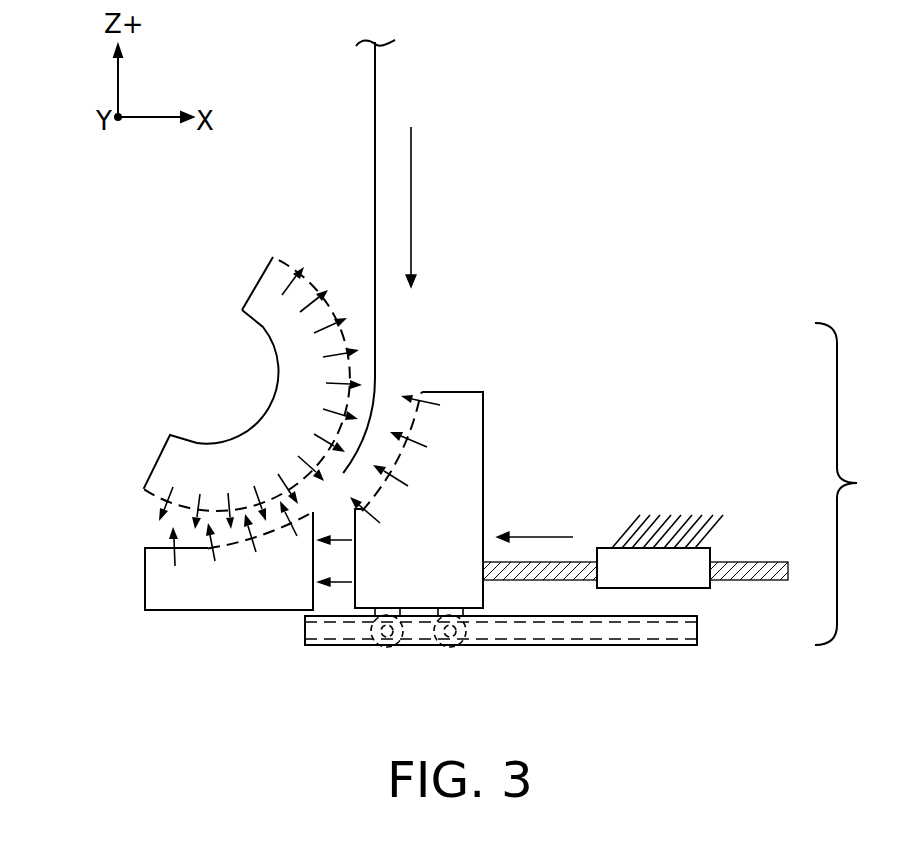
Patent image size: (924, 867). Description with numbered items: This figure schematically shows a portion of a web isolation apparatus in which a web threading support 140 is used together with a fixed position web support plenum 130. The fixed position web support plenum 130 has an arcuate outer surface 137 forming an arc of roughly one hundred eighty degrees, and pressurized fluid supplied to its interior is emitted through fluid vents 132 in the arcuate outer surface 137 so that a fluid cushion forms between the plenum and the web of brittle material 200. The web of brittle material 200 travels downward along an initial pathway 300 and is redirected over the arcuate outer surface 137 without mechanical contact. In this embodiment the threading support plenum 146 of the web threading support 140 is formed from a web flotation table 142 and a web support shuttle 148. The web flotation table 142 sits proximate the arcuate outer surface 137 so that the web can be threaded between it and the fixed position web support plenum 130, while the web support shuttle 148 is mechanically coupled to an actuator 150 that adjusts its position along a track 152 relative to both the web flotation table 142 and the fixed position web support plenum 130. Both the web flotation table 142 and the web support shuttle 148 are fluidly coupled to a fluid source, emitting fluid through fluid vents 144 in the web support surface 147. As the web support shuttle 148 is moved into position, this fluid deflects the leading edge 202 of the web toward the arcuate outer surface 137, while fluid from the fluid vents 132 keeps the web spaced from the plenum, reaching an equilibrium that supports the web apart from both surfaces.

The fixed position web support plenum 130 is at (262, 327).
The fluid vents 132 is at (343, 382).
The arcuate outer surface 137 is at (277, 258).
The web threading support 140 is at (867, 484).
The web flotation table 142 is at (172, 612).
The fluid vents 144 is at (407, 450).
The threading support plenum 146 is at (541, 421).
The web support surface 147 is at (153, 547).
The web support shuttle 148 is at (448, 390).
The actuator 150 is at (712, 588).
The track 152 is at (530, 647).
The web of brittle material 200 is at (395, 63).
The leading edge 202 is at (350, 452).
The initial pathway 300 is at (411, 200).